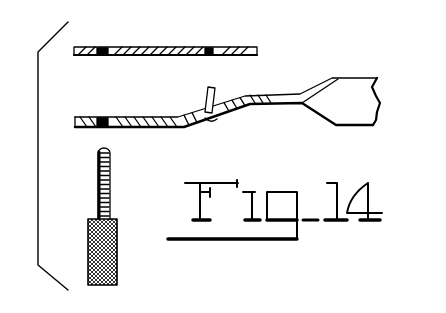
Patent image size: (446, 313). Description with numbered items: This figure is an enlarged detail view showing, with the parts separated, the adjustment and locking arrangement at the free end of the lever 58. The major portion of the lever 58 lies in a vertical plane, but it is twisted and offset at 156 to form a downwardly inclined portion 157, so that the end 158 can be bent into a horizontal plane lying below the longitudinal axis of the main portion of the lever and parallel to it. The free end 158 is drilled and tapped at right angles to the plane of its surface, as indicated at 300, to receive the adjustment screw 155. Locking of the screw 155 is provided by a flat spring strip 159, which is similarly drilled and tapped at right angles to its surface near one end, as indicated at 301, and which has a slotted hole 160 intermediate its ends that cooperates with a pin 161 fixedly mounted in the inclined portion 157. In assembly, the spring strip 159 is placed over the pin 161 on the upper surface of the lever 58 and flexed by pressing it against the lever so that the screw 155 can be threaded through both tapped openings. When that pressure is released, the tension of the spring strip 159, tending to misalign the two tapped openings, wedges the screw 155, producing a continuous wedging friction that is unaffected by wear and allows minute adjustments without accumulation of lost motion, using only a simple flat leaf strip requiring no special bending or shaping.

The lever 58 is at (366, 91).
The adjustment screw 155 is at (117, 260).
The twisted and offset portion 156 is at (318, 89).
The downwardly inclined portion 157 is at (242, 113).
The free end 158 is at (78, 123).
The flat spring strip 159 is at (236, 48).
The slotted hole 160 is at (210, 48).
The pin 161 is at (208, 92).
The drilled and tapped opening 300 is at (103, 117).
The drilled and tapped opening 301 is at (100, 50).